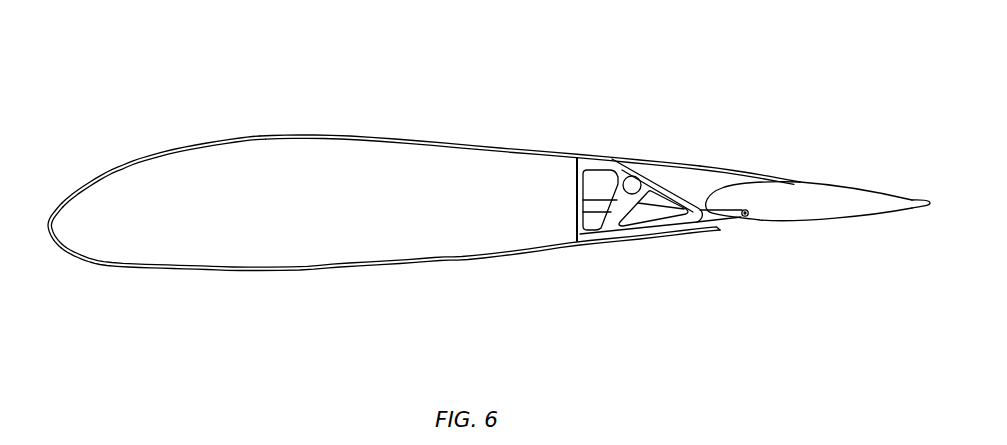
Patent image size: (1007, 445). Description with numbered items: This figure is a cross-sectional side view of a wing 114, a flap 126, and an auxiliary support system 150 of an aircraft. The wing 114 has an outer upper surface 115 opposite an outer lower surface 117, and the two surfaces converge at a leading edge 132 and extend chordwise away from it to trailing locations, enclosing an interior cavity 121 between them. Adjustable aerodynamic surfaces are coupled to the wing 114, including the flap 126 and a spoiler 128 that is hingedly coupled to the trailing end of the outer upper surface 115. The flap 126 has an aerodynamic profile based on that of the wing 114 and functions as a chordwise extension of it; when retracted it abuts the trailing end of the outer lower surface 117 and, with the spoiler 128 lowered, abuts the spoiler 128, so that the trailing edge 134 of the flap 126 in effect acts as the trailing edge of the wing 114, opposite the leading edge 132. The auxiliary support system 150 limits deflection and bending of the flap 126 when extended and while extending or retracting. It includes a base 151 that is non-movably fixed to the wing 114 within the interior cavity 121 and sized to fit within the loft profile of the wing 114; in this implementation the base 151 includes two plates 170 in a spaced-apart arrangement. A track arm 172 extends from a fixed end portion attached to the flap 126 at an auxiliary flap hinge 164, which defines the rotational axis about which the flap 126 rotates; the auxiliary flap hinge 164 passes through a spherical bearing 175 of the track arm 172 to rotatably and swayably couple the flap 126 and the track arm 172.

The wing 114 is at (212, 142).
The outer upper surface 115 is at (387, 134).
The outer lower surface 117 is at (468, 260).
The interior cavity 121 is at (362, 232).
The flap 126 is at (826, 191).
The spoiler 128 is at (733, 175).
The leading edge 132 is at (49, 228).
The trailing edge 134 is at (936, 203).
The auxiliary support system 150 is at (574, 223).
The base 151 is at (578, 157).
The auxiliary flap hinge 164 is at (742, 217).
The plates 170 is at (623, 162).
The track arm 172 is at (657, 204).
The spherical bearing 175 is at (748, 216).